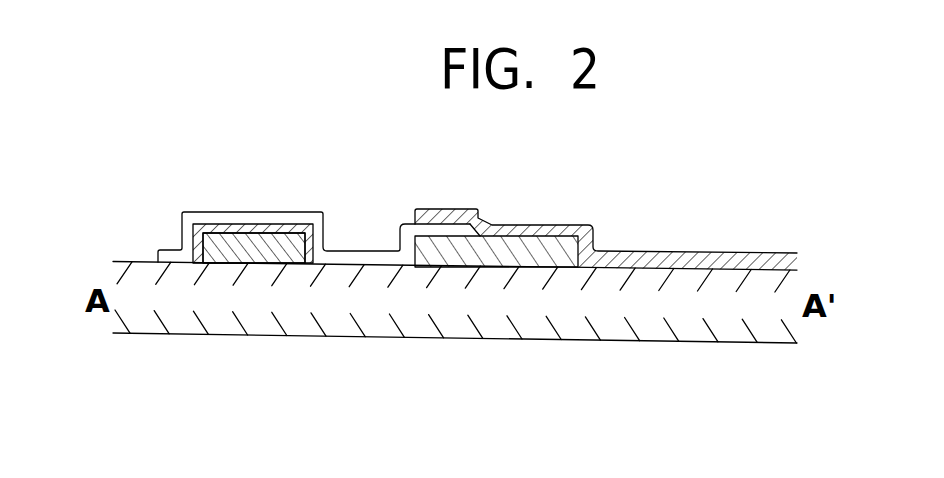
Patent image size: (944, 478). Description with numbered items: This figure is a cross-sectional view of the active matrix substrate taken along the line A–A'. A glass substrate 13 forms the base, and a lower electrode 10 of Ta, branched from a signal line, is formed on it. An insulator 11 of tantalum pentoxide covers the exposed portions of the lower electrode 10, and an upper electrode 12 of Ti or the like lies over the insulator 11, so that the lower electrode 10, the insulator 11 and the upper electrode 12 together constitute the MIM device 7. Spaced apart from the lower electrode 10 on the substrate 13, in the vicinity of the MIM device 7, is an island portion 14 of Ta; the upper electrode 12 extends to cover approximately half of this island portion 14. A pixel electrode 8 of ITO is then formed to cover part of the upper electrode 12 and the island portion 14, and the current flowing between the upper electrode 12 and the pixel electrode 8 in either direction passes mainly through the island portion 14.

The MIM device 7 is at (93, 182).
The pixel electrode 8 is at (715, 253).
The lower electrode 10 is at (202, 235).
The insulator 11 is at (223, 224).
The upper electrode 12 is at (263, 216).
The glass substrate 13 is at (422, 318).
The island portion 14 is at (493, 268).